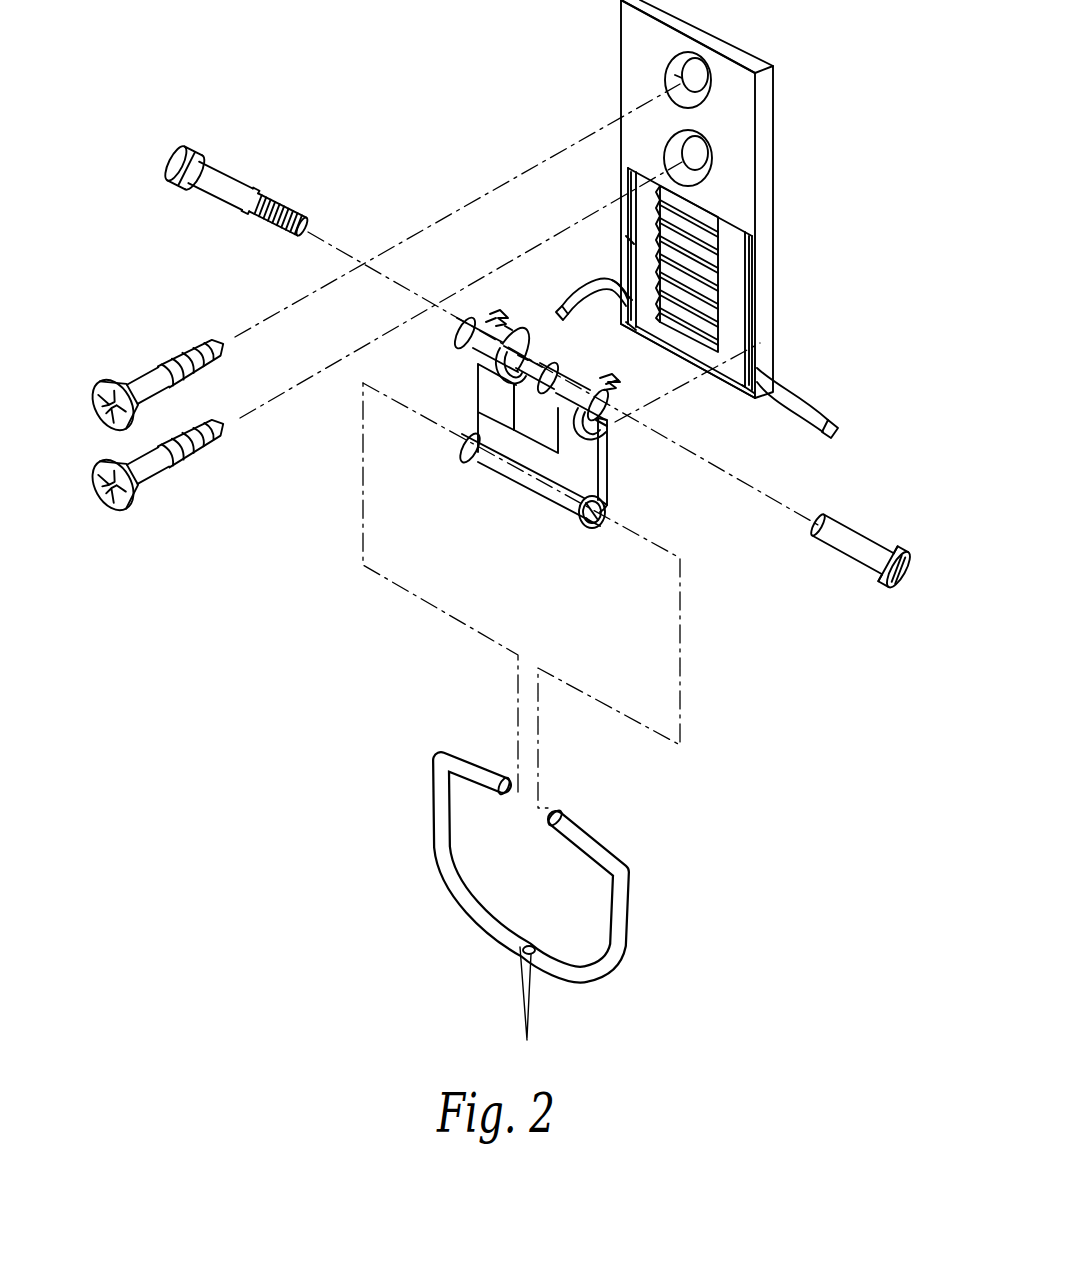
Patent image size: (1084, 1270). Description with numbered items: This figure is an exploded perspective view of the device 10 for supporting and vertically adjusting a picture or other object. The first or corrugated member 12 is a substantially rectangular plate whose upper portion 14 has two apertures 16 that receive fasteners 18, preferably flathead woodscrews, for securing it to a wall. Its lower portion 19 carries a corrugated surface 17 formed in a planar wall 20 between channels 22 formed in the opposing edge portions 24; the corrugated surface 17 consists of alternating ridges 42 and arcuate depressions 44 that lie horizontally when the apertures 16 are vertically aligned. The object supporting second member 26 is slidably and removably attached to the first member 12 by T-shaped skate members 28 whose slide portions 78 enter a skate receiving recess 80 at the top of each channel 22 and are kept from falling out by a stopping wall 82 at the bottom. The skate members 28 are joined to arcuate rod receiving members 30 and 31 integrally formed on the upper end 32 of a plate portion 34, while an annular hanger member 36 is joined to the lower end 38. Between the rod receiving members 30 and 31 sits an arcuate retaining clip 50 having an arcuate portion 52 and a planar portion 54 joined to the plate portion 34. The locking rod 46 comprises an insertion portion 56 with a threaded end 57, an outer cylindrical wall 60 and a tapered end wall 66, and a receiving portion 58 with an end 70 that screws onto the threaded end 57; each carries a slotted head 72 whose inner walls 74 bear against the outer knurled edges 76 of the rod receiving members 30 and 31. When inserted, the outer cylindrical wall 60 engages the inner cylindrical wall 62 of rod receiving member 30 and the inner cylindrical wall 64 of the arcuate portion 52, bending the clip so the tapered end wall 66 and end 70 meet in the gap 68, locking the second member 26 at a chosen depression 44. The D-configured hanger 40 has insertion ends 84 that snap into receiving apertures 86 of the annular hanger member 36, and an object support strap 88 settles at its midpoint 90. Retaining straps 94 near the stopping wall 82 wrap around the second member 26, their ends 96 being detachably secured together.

The device 10 is at (810, 101).
The first or corrugated member 12 is at (768, 178).
The upper portion 14 is at (622, 22).
The apertures 16 is at (686, 83).
The corrugated surface 17 is at (630, 290).
The fasteners 18 is at (100, 390).
The lower portion 19 is at (630, 238).
The planar wall 20 is at (665, 180).
The channels 22 is at (768, 380).
The edge portions 24 is at (636, 252).
The second member 26 is at (697, 563).
The skate members 28 is at (492, 318).
The arcuate rod receiving member 30 is at (598, 380).
The arcuate rod receiving member 31 is at (478, 365).
The upper end 32 is at (610, 460).
The plate portion 34 is at (604, 505).
The annular hanger member 36 is at (488, 455).
The lower end 38 is at (593, 515).
The hanger 40 is at (631, 913).
The ridges 42 is at (729, 205).
The arcuate depressions 44 is at (722, 300).
The locking rod 46 is at (526, 335).
The arcuate retaining clip 50 is at (528, 356).
The arcuate portion 52 is at (525, 357).
The planar portion 54 is at (535, 470).
The insertion portion 56 is at (176, 182).
The threaded end 57 is at (297, 218).
The receiving portion 58 is at (840, 520).
The outer cylindrical wall 60 is at (228, 165).
The inner cylindrical wall 62 is at (628, 432).
The inner cylindrical wall 64 is at (510, 335).
The tapered end wall 66 is at (258, 203).
The gap 68 is at (510, 375).
The end 70 is at (820, 530).
The slotted heads 72 is at (175, 152).
The inner walls 74 is at (197, 152).
The outer knurled edges 76 is at (470, 345).
The slide portion 78 is at (497, 316).
The skate receiving recess 80 is at (628, 185).
The stopping wall 82 is at (636, 328).
The insertion ends 84 is at (505, 795).
The receiving apertures 86 is at (592, 518).
The object support strap 88 is at (528, 1010).
The midpoint 90 is at (510, 933).
The retaining straps 94 is at (592, 283).
The ends 96 is at (566, 312).